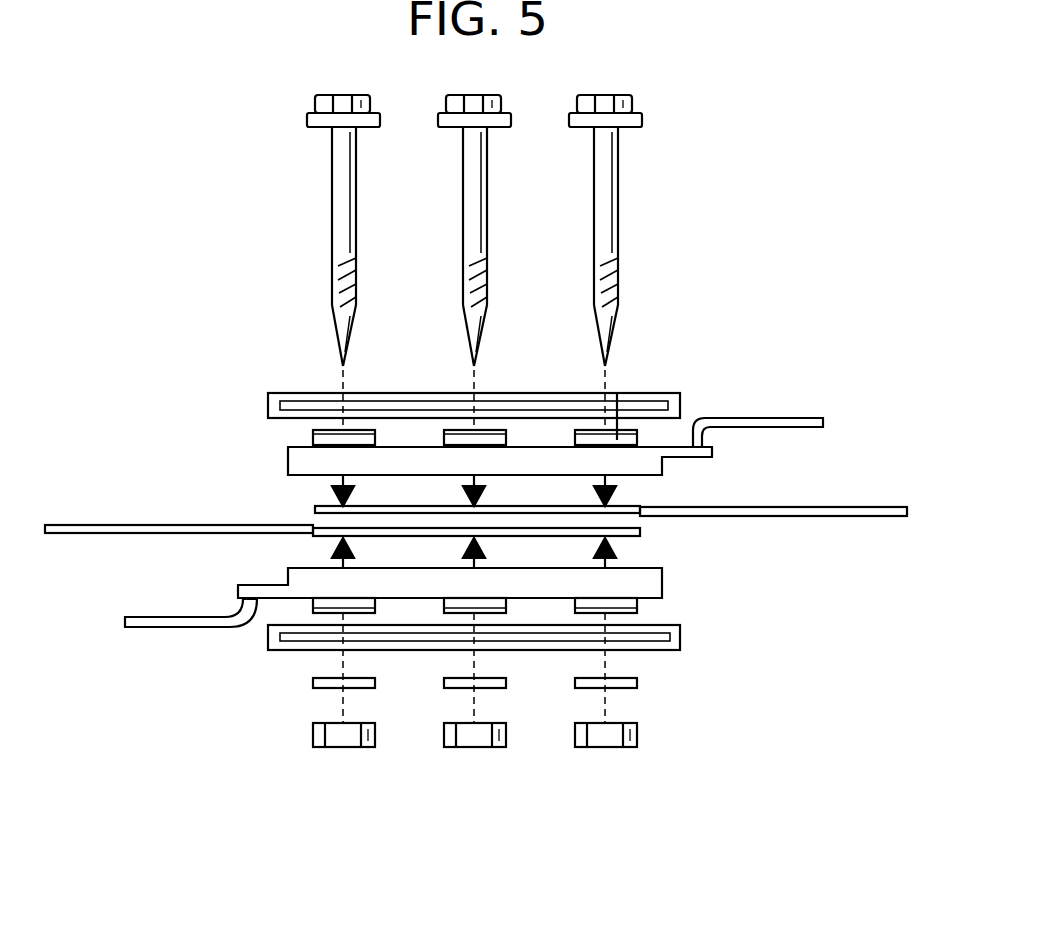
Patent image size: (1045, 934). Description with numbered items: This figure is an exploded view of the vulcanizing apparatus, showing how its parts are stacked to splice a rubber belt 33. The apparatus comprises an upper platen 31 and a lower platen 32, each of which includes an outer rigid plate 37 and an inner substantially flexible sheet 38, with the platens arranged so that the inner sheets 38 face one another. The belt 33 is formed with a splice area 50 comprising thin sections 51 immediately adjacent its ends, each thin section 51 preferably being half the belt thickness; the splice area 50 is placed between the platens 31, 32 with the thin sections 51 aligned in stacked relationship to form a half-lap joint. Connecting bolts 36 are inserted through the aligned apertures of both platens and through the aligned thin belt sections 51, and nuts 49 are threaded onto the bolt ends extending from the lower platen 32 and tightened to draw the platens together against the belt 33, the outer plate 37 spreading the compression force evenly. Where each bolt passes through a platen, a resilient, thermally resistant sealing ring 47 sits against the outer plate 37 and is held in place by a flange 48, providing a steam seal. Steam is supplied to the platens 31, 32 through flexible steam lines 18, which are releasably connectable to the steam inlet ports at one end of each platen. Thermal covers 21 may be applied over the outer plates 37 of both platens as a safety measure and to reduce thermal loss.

The connecting bolt 36 is at (632, 103).
The thermal cover 21 is at (290, 393).
The outer rigid plate 37 is at (293, 447).
The upper platen 31 is at (262, 465).
The lower platen 32 is at (682, 580).
The inner flexible sheet 38 is at (300, 478).
The thin section 51 is at (405, 505).
The rubber belt 33 is at (885, 505).
The splice area 50 is at (415, 545).
The flexible steam line 18 is at (812, 417).
The flange 48 is at (617, 394).
The sealing ring 47 is at (633, 438).
The nut 49 is at (638, 737).